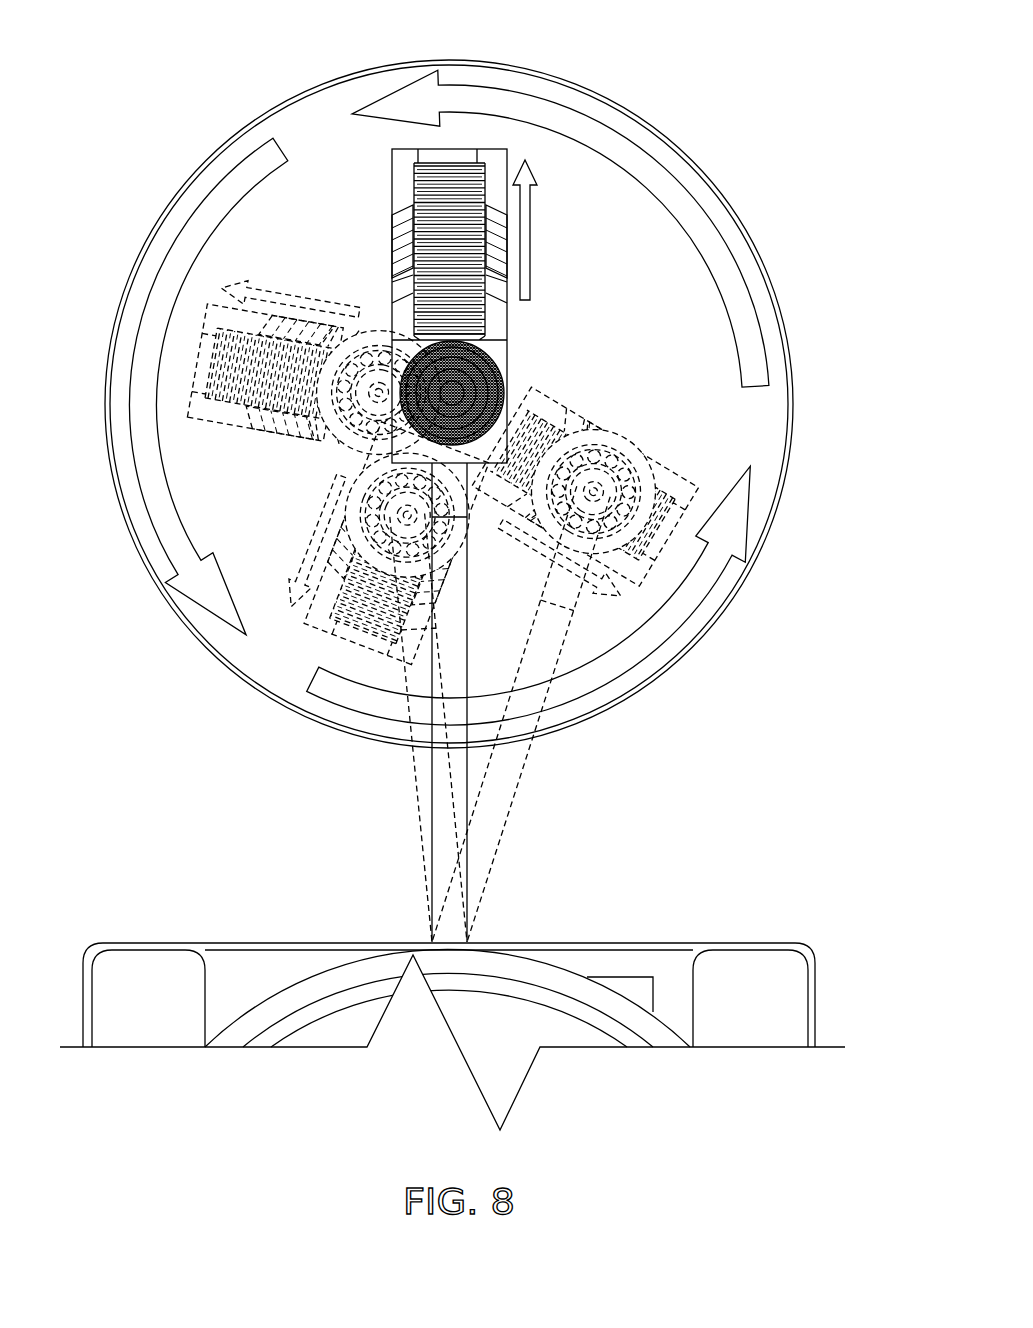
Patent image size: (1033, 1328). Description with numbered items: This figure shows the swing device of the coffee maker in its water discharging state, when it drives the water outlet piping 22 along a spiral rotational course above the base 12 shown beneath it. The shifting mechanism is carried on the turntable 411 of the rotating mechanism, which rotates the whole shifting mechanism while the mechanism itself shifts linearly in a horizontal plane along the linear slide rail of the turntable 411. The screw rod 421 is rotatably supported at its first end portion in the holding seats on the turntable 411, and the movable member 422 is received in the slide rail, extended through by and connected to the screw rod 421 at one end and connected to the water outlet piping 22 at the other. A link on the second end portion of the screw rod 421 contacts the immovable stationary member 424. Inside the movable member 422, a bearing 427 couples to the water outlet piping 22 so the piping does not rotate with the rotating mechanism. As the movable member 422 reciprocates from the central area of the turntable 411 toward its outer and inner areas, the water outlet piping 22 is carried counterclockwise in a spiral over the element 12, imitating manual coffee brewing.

The turntable 411 is at (215, 150).
The screw rod 421 is at (432, 183).
The stationary member 424 is at (392, 233).
The bearing 427 is at (481, 338).
The movable member 422 is at (498, 352).
The water outlet piping 22 is at (458, 786).
The base 12 is at (264, 942).